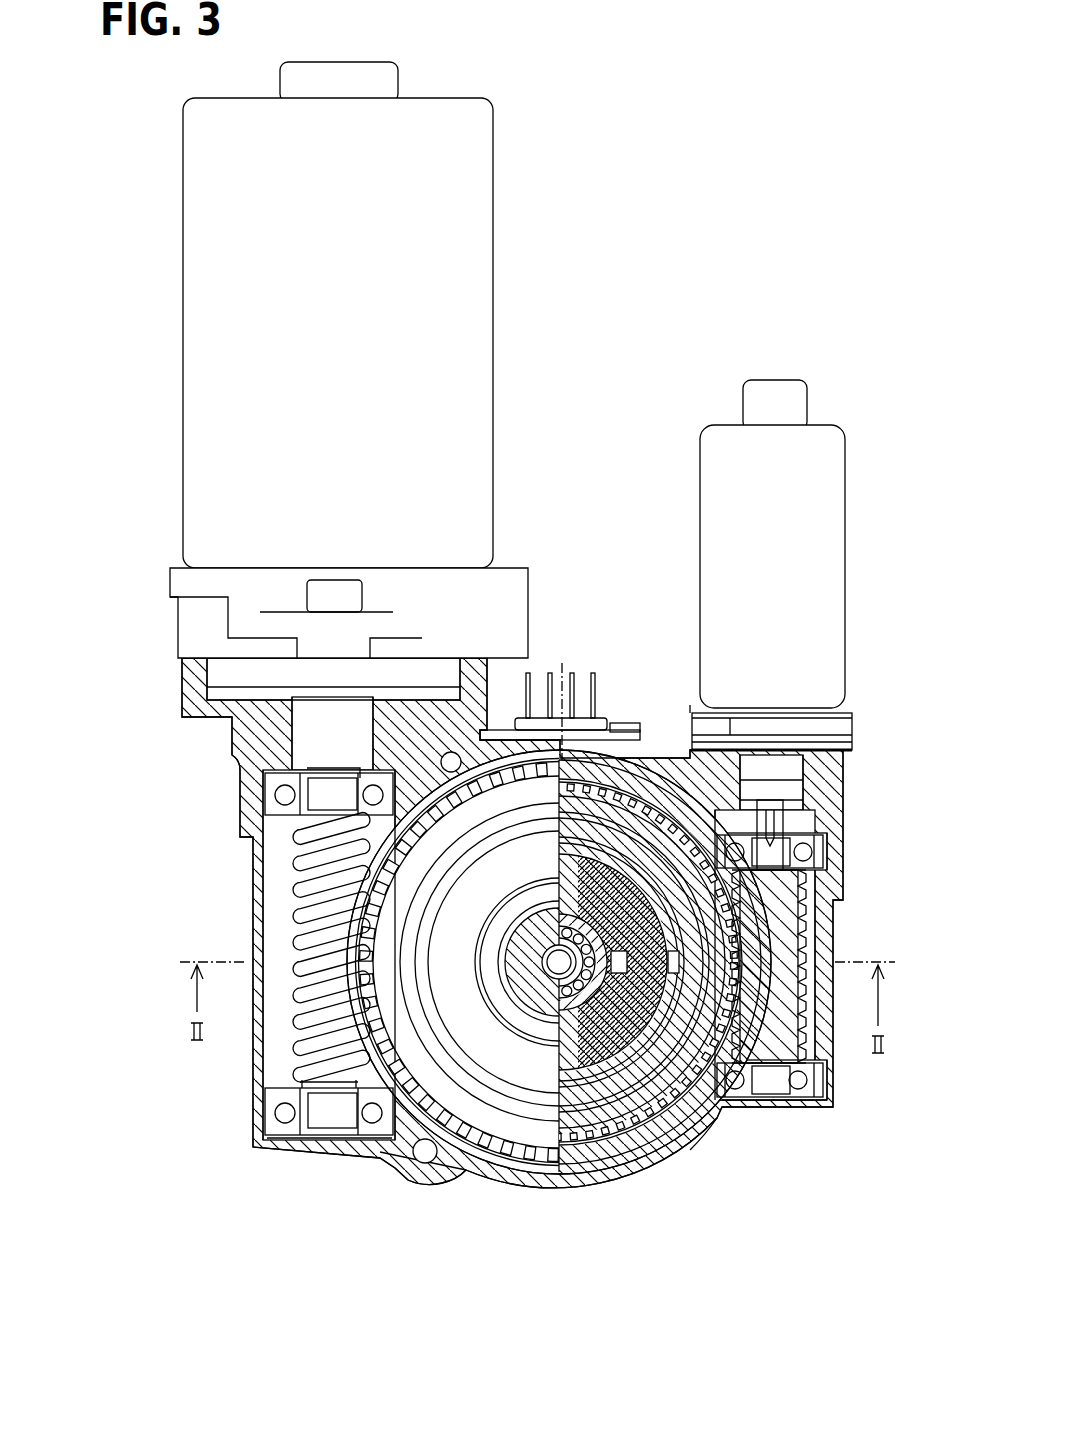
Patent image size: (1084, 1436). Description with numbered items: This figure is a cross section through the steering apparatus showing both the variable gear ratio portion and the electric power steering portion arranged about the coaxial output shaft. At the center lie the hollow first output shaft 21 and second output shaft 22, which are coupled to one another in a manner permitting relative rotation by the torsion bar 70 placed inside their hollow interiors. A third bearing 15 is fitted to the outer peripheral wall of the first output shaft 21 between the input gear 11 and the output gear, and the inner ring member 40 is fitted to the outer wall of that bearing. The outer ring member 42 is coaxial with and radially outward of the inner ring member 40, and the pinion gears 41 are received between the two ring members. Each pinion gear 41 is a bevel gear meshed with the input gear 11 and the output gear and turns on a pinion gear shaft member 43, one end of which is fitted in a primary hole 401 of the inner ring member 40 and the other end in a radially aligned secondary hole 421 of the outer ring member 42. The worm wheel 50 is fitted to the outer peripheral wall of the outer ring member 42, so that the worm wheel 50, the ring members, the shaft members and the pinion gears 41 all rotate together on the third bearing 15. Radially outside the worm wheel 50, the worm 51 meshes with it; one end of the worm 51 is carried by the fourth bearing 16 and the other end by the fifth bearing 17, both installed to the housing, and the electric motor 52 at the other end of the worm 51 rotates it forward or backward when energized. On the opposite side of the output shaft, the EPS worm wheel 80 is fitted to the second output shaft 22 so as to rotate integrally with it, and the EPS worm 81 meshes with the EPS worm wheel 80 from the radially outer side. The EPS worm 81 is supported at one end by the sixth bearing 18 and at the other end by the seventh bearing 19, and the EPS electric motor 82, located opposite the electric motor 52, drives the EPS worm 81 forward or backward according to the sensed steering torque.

The input gear 11 is at (596, 1182).
The third bearing 15 is at (498, 1150).
The fourth bearing 16 is at (830, 1080).
The fifth bearing 17 is at (803, 852).
The sixth bearing 18 is at (285, 1113).
The seventh bearing 19 is at (285, 800).
The first output shaft 21 is at (463, 1172).
The second output shaft 22 is at (517, 938).
The inner ring member 40 is at (522, 1150).
The primary holes 401 is at (543, 885).
The pinion gears 41 is at (566, 1140).
The outer ring member 42 is at (690, 1160).
The secondary holes 421 is at (654, 1150).
The pinion gear shaft members 43 is at (625, 1150).
The worm wheel 50 is at (712, 1130).
The worm 51 is at (832, 933).
The electric motor 52 is at (820, 596).
The torsion bar 70 is at (550, 963).
The EPS worm wheel 80 is at (430, 882).
The EPS worm 81 is at (296, 1084).
The EPS electric motor 82 is at (208, 447).